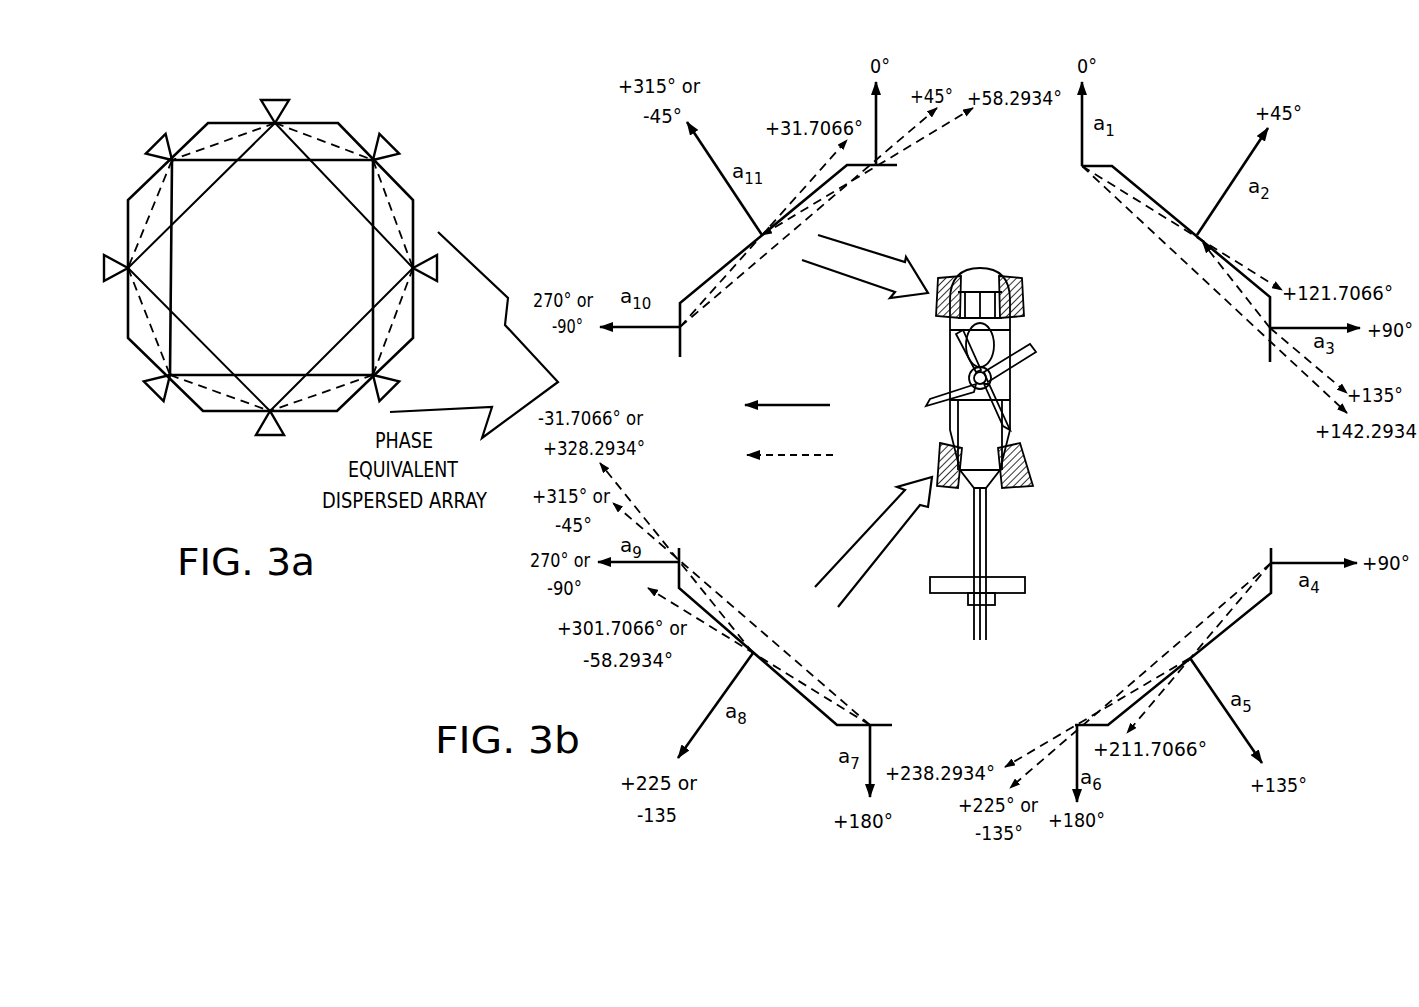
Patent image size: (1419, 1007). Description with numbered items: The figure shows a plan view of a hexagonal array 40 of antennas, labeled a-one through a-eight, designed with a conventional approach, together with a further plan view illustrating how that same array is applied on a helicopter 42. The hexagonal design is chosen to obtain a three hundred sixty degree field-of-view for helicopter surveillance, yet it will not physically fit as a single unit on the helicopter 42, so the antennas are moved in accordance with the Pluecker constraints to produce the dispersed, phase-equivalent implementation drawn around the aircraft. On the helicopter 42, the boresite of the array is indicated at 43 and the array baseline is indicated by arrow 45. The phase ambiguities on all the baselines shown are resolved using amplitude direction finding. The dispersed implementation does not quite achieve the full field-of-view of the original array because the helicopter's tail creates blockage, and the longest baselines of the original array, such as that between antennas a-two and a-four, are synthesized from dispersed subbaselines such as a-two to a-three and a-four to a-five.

In FIG. 3A, the hexagonal array 40 is at (203, 117).
In FIG. 3B, the helicopter 42 is at (1026, 326).
In FIG. 3B, the boresite 43 is at (836, 410).
In FIG. 3B, the array baseline 45 is at (791, 462).